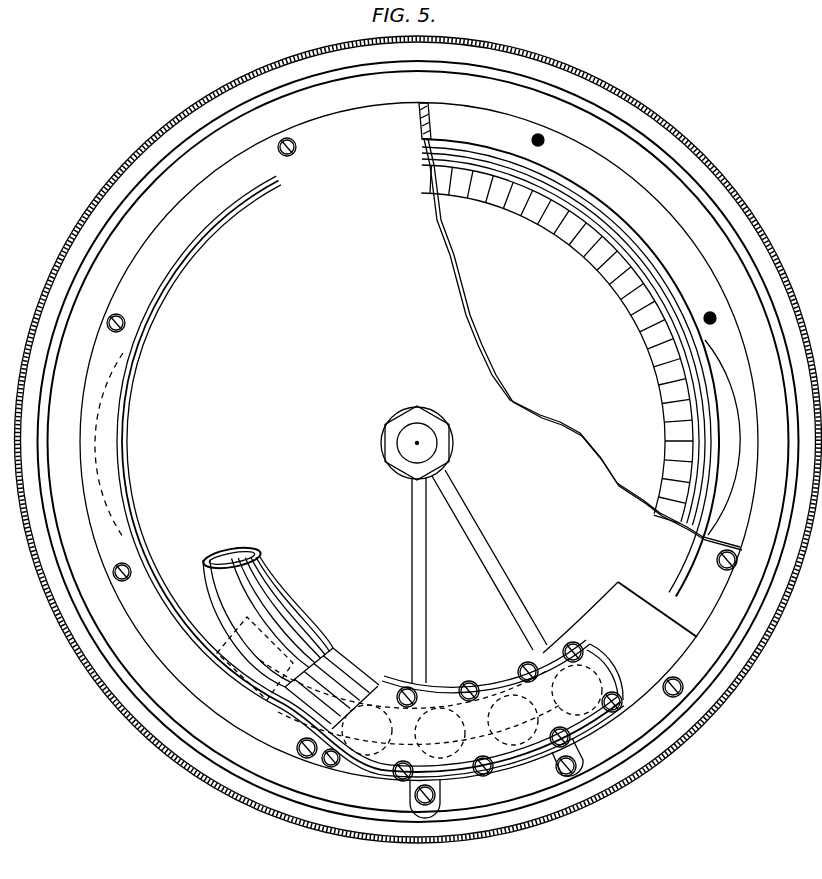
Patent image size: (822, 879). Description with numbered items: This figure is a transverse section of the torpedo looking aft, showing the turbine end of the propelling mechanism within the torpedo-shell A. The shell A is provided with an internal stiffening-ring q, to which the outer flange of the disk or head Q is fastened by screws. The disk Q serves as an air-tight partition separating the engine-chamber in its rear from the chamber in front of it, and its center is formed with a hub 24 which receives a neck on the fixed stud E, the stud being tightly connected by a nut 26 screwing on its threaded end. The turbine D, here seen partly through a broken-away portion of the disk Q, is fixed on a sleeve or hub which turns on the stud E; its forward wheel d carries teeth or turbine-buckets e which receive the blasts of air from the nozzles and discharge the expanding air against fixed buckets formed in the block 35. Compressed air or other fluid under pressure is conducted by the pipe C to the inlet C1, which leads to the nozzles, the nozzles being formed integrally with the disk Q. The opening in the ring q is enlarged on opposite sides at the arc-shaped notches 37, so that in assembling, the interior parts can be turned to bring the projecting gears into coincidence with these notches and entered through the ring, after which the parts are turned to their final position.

The hub 24 is at (396, 480).
The nut 26 is at (396, 443).
The block 35 is at (240, 642).
The arc-shaped notches 37 is at (103, 437).
The internal stiffening-ring q is at (394, 415).
The disk or head Q is at (490, 326).
The forward wheel d is at (557, 343).
The turbine-buckets e is at (526, 222).
The turbine D is at (570, 368).
The fixed stud E is at (430, 450).
The pipe C is at (262, 580).
The inlet C1 is at (370, 682).
The torpedo-shell A is at (635, 666).